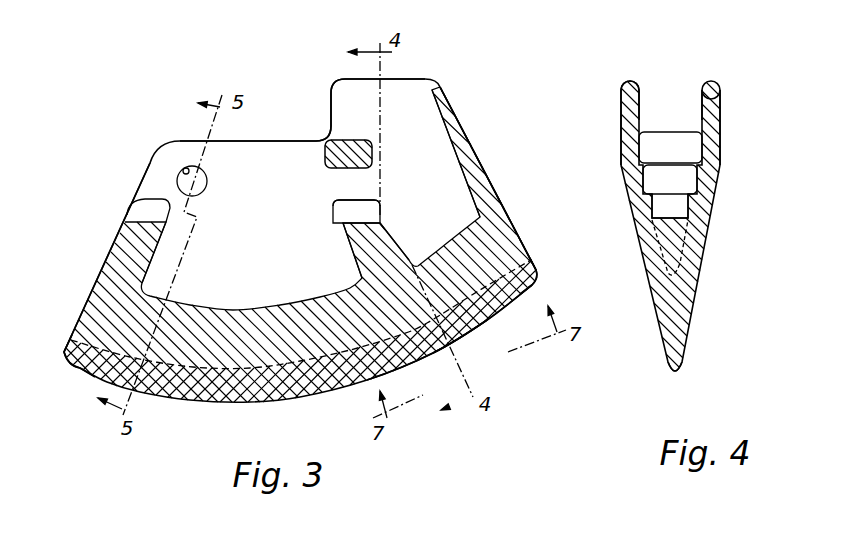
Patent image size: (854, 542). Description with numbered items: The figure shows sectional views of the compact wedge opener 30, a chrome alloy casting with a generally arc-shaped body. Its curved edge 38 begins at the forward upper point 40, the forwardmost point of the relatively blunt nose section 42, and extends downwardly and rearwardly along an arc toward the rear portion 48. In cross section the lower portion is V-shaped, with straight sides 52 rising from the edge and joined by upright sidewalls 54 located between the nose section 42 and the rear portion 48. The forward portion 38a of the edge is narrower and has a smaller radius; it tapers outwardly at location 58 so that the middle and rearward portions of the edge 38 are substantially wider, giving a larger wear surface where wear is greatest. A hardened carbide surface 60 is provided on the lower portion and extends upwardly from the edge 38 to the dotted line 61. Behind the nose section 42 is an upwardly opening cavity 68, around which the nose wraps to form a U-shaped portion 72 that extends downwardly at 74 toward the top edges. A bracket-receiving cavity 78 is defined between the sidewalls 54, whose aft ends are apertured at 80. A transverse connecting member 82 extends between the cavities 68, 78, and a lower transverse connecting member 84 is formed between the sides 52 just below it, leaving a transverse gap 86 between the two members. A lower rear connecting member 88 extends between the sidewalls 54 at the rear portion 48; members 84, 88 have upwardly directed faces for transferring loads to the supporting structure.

In FIG. 3, the opener 30 is at (487, 93).
In FIG. 3, the curved edge 38 is at (340, 389).
In FIG. 3, the forward portion of the curved edge 38a is at (466, 336).
In FIG. 4, the forward portion of the curved edge 38a is at (680, 362).
In FIG. 3, the forward upper point 40 is at (537, 280).
In FIG. 3, the nose section 42 is at (507, 214).
In FIG. 3, the rear portion 48 is at (70, 350).
In FIG. 4, the straight sides 52 is at (643, 263).
In FIG. 3, the upright sidewalls 54 is at (150, 175).
In FIG. 4, the upright sidewalls 54 is at (618, 110).
In FIG. 3, the tapered location 58 is at (433, 354).
In FIG. 3, the hardened carbide surface 60 is at (193, 401).
In FIG. 3, the dotted line 61 is at (245, 388).
In FIG. 3, the cavity 68 is at (413, 104).
In FIG. 3, the U-shaped portion 72 is at (438, 82).
In FIG. 3, the downward extension of the U-shaped portion 74 is at (331, 108).
In FIG. 3, the bracket-receiving cavity 78 is at (288, 164).
In FIG. 3, the aperture 80 is at (183, 165).
In FIG. 3, the transverse connecting member 82 is at (352, 141).
In FIG. 4, the transverse connecting member 82 is at (687, 148).
In FIG. 3, the lower transverse connecting member 84 is at (380, 212).
In FIG. 4, the lower transverse connecting member 84 is at (689, 198).
In FIG. 3, the transverse gap 86 is at (350, 187).
In FIG. 4, the transverse gap 86 is at (680, 178).
In FIG. 3, the lower rear connecting member 88 is at (140, 213).